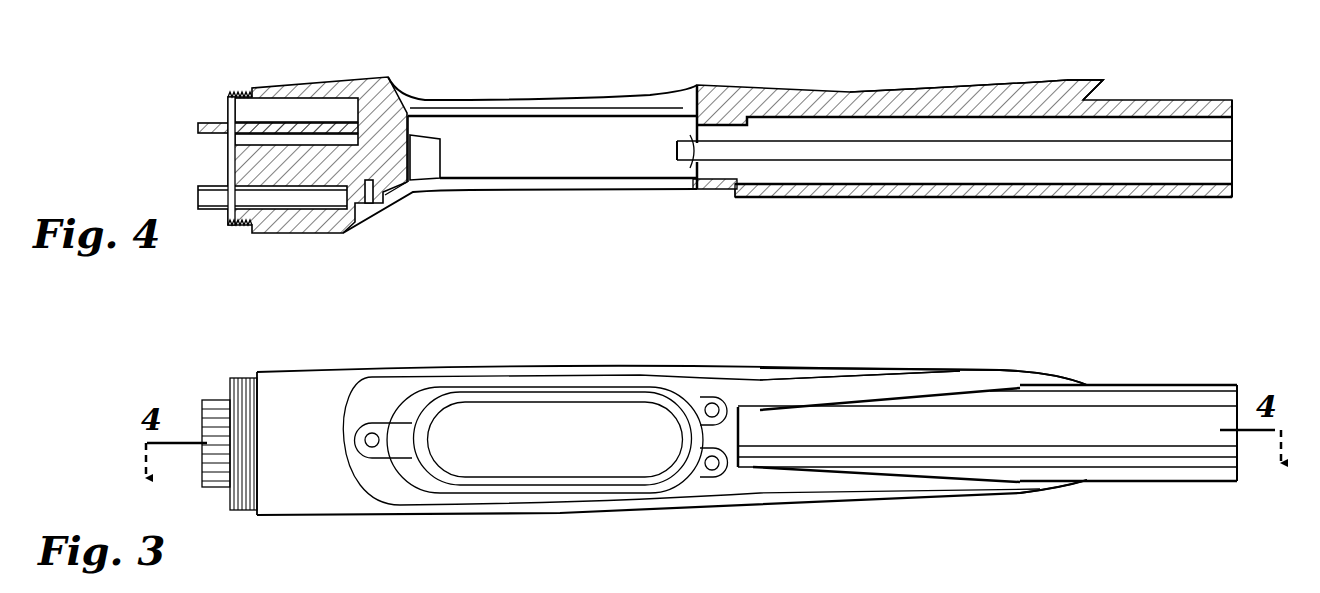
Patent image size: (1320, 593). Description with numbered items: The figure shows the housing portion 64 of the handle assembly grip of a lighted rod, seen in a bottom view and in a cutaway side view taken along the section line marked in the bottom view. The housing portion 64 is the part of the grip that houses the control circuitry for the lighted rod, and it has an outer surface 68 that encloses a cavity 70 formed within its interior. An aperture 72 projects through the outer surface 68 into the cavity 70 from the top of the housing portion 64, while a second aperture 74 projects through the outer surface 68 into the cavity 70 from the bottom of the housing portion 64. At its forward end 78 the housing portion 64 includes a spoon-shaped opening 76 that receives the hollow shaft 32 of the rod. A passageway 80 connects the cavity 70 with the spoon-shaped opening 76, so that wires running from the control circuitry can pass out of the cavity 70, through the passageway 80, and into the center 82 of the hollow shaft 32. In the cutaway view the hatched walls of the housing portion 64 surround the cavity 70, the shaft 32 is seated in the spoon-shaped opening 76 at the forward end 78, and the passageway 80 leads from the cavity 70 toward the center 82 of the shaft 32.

In FIG. 4, the shaft 32 is at (1233, 170).
In FIG. 3, the shaft 32 is at (1133, 463).
In FIG. 4, the housing portion 64 is at (873, 92).
In FIG. 3, the housing portion 64 is at (762, 367).
In FIG. 4, the outer surface 68 is at (735, 83).
In FIG. 3, the outer surface 68 is at (303, 390).
In FIG. 4, the cavity 70 is at (550, 163).
In FIG. 4, the aperture 72 is at (500, 105).
In FIG. 4, the aperture 74 is at (565, 185).
In FIG. 4, the spoon-shaped opening 76 is at (1000, 112).
In FIG. 3, the spoon-shaped opening 76 is at (1017, 385).
In FIG. 4, the forward end 78 is at (1107, 80).
In FIG. 3, the forward end 78 is at (960, 380).
In FIG. 4, the passageway 80 is at (677, 143).
In FIG. 4, the center 82 is at (1233, 138).